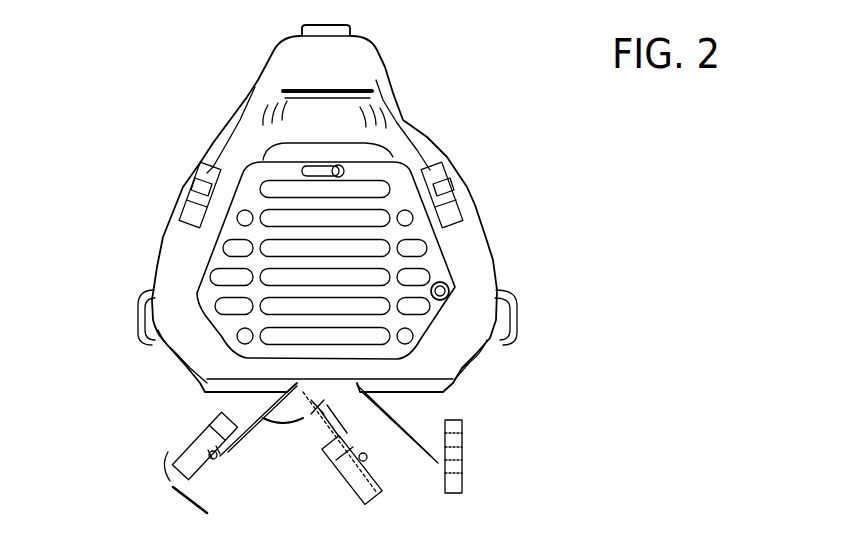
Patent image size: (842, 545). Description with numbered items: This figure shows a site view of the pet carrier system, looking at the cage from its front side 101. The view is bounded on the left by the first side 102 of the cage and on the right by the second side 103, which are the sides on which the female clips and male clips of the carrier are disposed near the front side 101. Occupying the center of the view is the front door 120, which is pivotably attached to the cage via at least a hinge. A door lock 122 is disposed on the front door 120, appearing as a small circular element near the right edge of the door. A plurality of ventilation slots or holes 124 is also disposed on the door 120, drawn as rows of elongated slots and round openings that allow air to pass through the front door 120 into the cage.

The front side 101 is at (380, 157).
The first side 102 is at (163, 233).
The second side 103 is at (493, 247).
The front door 120 is at (213, 296).
The door lock 122 is at (450, 291).
The ventilation slots or holes 124 is at (413, 341).